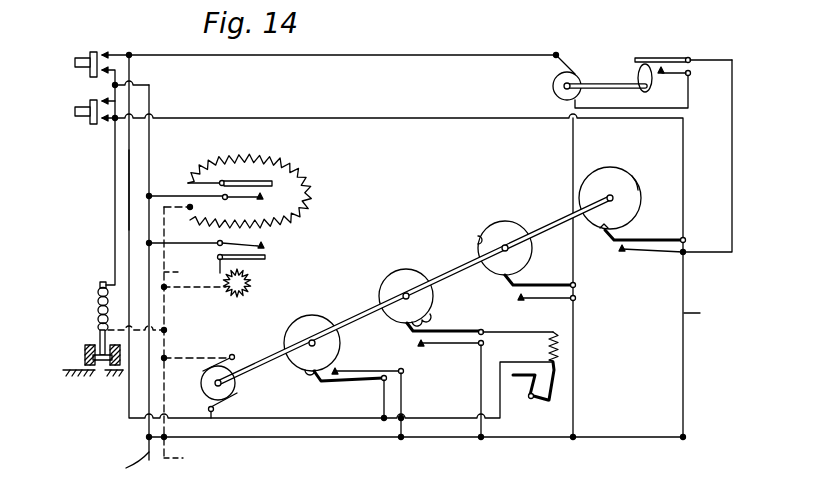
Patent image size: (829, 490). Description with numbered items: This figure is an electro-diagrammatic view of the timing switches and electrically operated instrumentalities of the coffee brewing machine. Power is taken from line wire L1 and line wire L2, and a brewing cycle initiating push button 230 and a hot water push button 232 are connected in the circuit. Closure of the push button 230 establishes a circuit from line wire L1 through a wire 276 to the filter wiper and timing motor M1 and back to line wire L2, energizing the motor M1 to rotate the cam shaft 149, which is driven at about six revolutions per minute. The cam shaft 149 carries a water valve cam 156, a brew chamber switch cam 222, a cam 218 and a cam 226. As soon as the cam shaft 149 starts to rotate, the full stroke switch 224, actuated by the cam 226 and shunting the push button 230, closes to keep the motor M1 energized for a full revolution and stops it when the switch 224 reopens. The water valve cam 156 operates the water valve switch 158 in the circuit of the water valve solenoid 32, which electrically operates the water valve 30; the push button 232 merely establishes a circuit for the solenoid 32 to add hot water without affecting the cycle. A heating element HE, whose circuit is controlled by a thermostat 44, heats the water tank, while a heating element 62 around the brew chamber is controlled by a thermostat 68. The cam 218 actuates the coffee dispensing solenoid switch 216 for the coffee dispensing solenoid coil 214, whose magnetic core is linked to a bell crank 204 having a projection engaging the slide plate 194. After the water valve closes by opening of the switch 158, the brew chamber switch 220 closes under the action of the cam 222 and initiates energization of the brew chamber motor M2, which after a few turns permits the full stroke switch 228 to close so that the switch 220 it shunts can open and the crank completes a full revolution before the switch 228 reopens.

The brewing cycle initiating push button 230 is at (75, 60).
The hot water push button 232 is at (75, 106).
The wire 276 is at (129, 192).
The water valve solenoid 32 is at (98, 295).
The water valve 30 is at (98, 378).
The heating element HE is at (310, 187).
The thermostat 44 is at (247, 190).
The thermostat 68 is at (266, 246).
The heating element 62 is at (252, 280).
The line wire L2 is at (183, 369).
The line wire L1 is at (411, 396).
The cam 226 is at (288, 333).
The cam 218 is at (395, 272).
The brew chamber switch cam 222 is at (515, 225).
The water valve cam 156 is at (607, 169).
The cam shaft 149 is at (462, 268).
The filter wiper and timing motor M1 is at (236, 389).
The full stroke switch 224 is at (353, 372).
The coffee dispensing solenoid switch 216 is at (445, 333).
The brew chamber switch 220 is at (544, 292).
The water valve switch 158 is at (651, 250).
The coffee dispensing solenoid coil 214 is at (560, 351).
The slide plate 194 is at (526, 377).
The bell crank 204 is at (535, 400).
The brew chamber motor M2 is at (553, 88).
The full stroke switch 228 is at (661, 65).